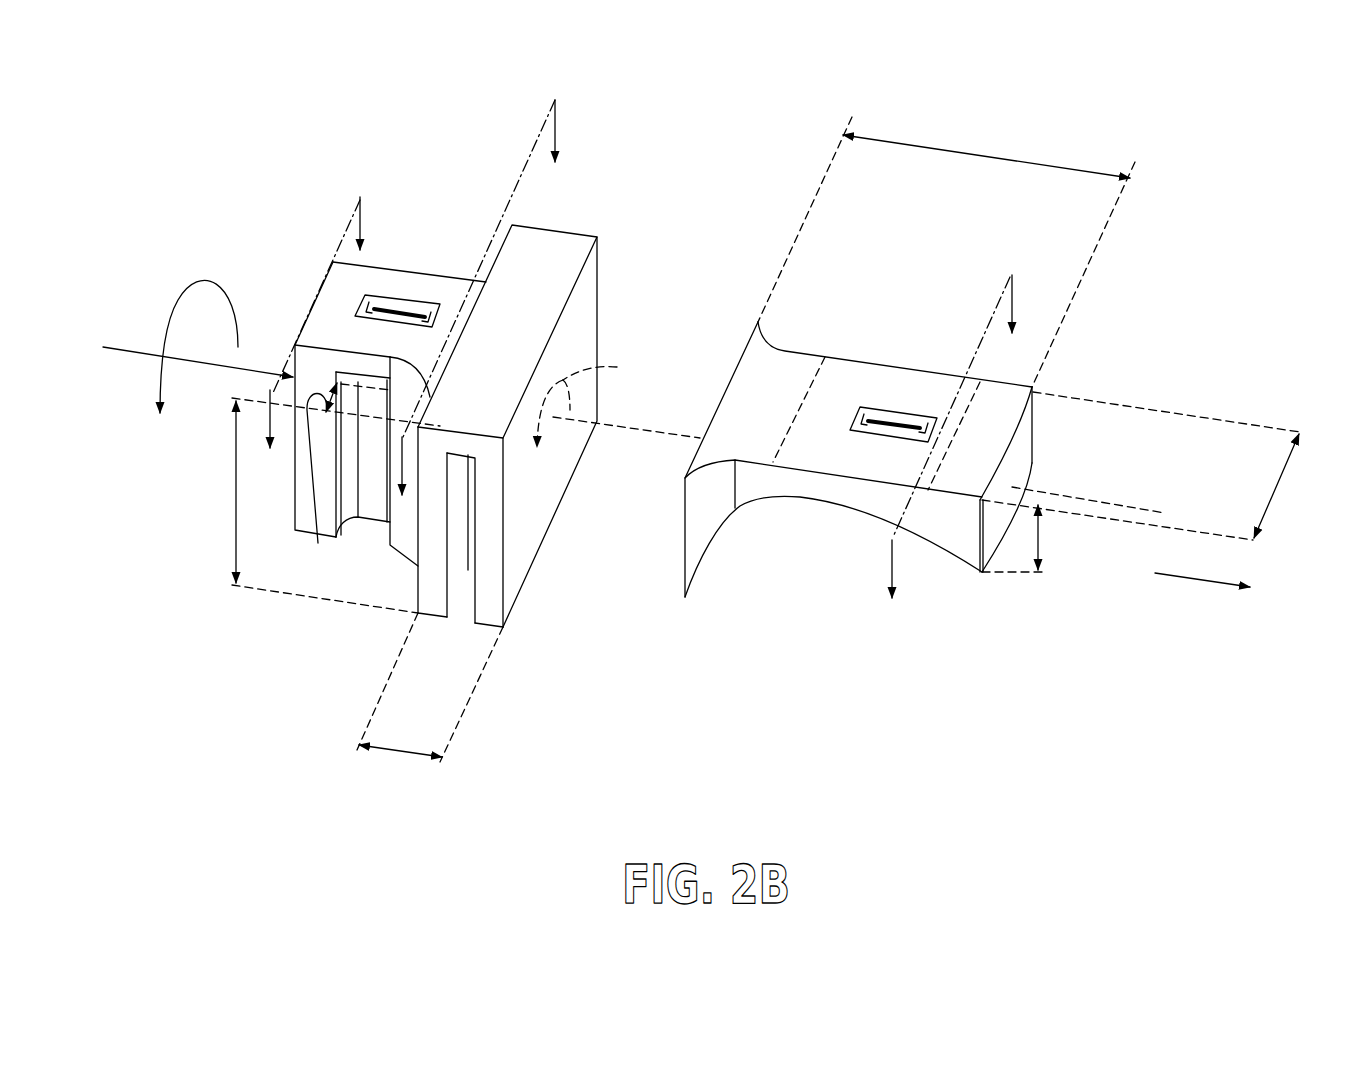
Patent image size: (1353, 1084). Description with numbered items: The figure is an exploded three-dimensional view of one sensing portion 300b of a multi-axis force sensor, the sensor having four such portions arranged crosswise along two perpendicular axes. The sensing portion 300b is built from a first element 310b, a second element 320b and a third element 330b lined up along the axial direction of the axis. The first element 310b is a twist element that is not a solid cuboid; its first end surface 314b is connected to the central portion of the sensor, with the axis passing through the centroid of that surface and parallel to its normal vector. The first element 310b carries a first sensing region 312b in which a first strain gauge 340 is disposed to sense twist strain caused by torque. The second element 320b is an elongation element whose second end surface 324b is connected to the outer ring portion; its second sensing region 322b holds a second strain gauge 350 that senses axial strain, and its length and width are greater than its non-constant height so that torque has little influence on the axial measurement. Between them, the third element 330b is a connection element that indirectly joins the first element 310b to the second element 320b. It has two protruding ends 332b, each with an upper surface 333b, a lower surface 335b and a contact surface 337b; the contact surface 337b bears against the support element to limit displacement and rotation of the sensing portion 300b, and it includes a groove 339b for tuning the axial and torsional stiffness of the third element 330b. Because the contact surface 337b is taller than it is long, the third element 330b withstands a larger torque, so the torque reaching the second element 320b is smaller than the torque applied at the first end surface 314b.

The sensing portion 300b is at (1147, 647).
The first element 310b is at (458, 275).
The first sensing region 312b is at (426, 287).
The first end surface 314b is at (327, 263).
The second element 320b is at (1002, 415).
The second sensing region 322b is at (887, 393).
The second end surface 324b is at (1020, 455).
The third element 330b is at (543, 293).
The protruding end 332b is at (580, 235).
The upper surface 333b is at (463, 428).
The lower surface 335b is at (488, 632).
The contact surface 337b is at (492, 608).
The groove 339b is at (449, 536).
The first strain gauge 340 is at (357, 303).
The second strain gauge 350 is at (890, 437).